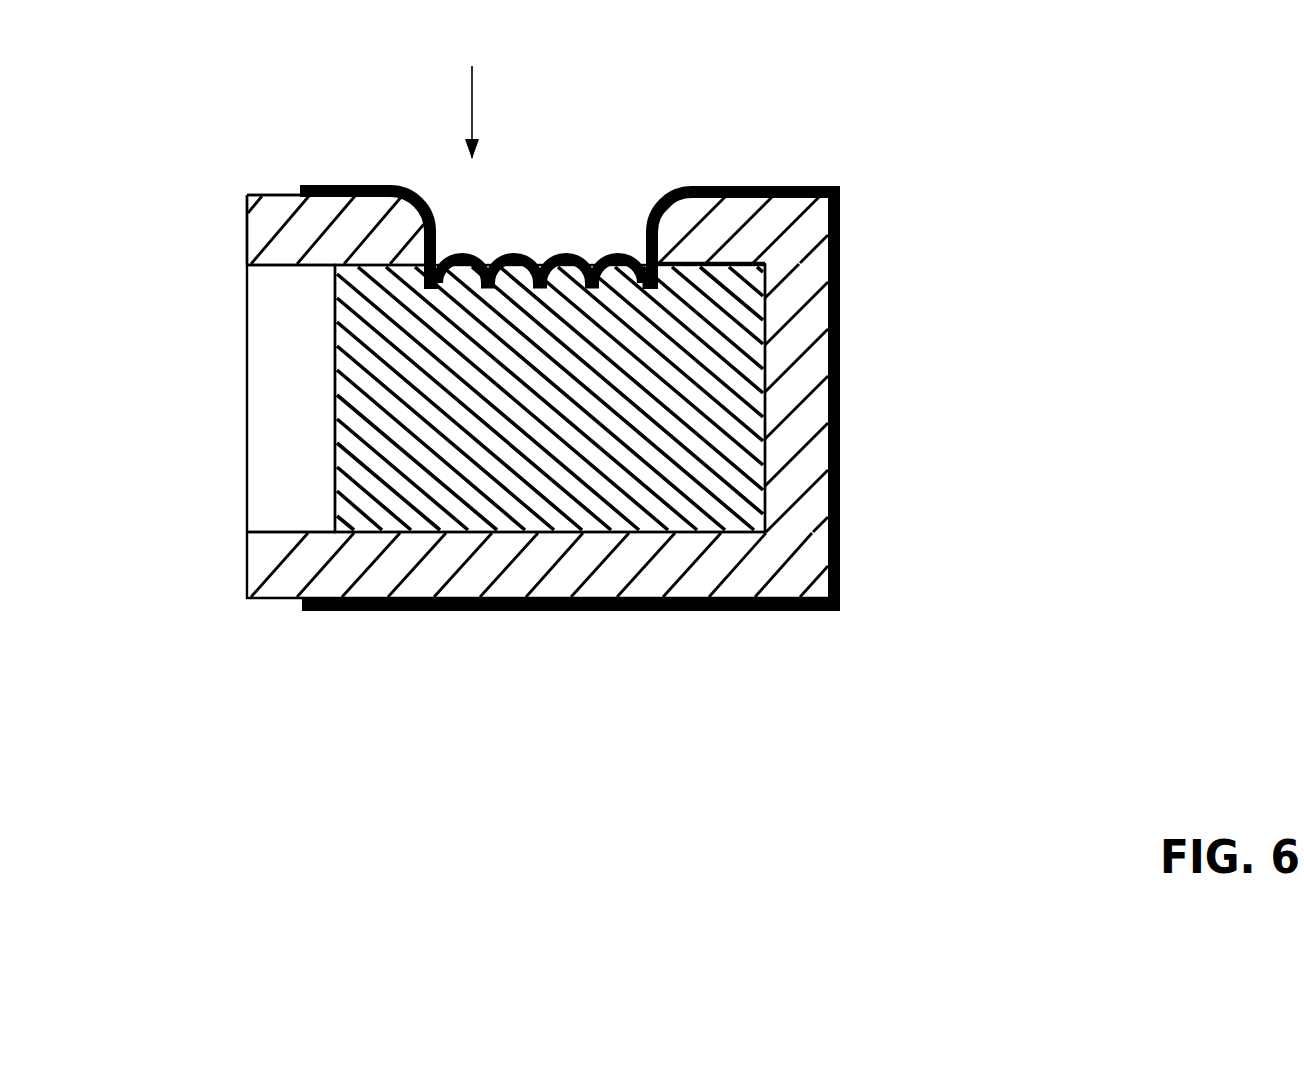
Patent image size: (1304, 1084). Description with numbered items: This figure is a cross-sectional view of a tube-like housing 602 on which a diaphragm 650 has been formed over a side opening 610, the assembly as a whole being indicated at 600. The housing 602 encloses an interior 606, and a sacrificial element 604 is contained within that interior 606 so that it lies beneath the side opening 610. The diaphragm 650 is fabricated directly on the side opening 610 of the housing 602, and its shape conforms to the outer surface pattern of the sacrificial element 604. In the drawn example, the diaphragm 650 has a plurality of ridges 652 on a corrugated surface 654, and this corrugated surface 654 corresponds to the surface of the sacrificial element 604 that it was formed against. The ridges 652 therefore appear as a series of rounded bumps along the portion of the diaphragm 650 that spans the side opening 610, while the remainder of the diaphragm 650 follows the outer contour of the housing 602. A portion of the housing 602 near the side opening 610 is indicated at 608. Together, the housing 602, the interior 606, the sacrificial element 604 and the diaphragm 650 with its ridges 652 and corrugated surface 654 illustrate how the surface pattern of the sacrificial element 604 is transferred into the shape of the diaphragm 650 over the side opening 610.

The sensor package 600 is at (949, 742).
The housing 602 is at (292, 193).
The sacrificial element 604 is at (333, 344).
The interior 606 is at (280, 387).
The housing top surface 608 is at (242, 195).
The side opening 610 is at (469, 98).
The diaphragm 650 is at (732, 187).
The ridges 652 is at (613, 242).
The corrugated surface 654 is at (458, 252).